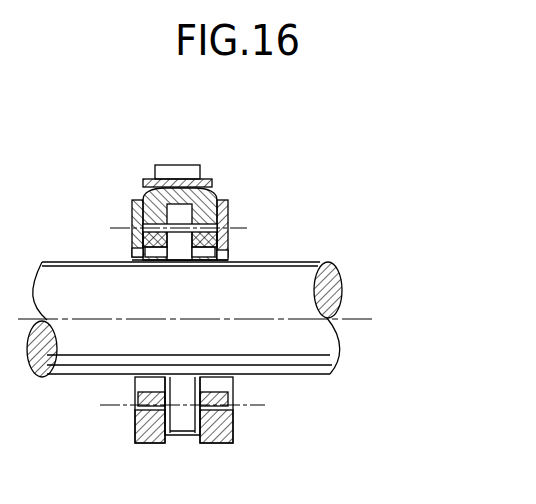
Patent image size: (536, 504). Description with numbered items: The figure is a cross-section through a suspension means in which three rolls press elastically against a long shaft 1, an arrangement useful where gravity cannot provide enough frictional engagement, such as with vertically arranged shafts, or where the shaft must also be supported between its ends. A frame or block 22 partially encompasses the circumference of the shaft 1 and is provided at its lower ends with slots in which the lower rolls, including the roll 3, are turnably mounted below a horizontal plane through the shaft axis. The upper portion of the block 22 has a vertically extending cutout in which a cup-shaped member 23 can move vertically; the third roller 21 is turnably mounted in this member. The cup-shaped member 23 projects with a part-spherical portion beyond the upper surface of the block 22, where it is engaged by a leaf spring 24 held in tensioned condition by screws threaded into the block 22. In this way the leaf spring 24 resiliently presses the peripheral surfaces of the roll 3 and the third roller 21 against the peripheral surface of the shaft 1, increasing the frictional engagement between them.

The shaft 1 is at (290, 277).
The roll 3 is at (188, 428).
The third roller 21 is at (228, 220).
The frame or block 22 is at (228, 432).
The cup-shaped member 23 is at (213, 200).
The leaf spring 24 is at (210, 183).